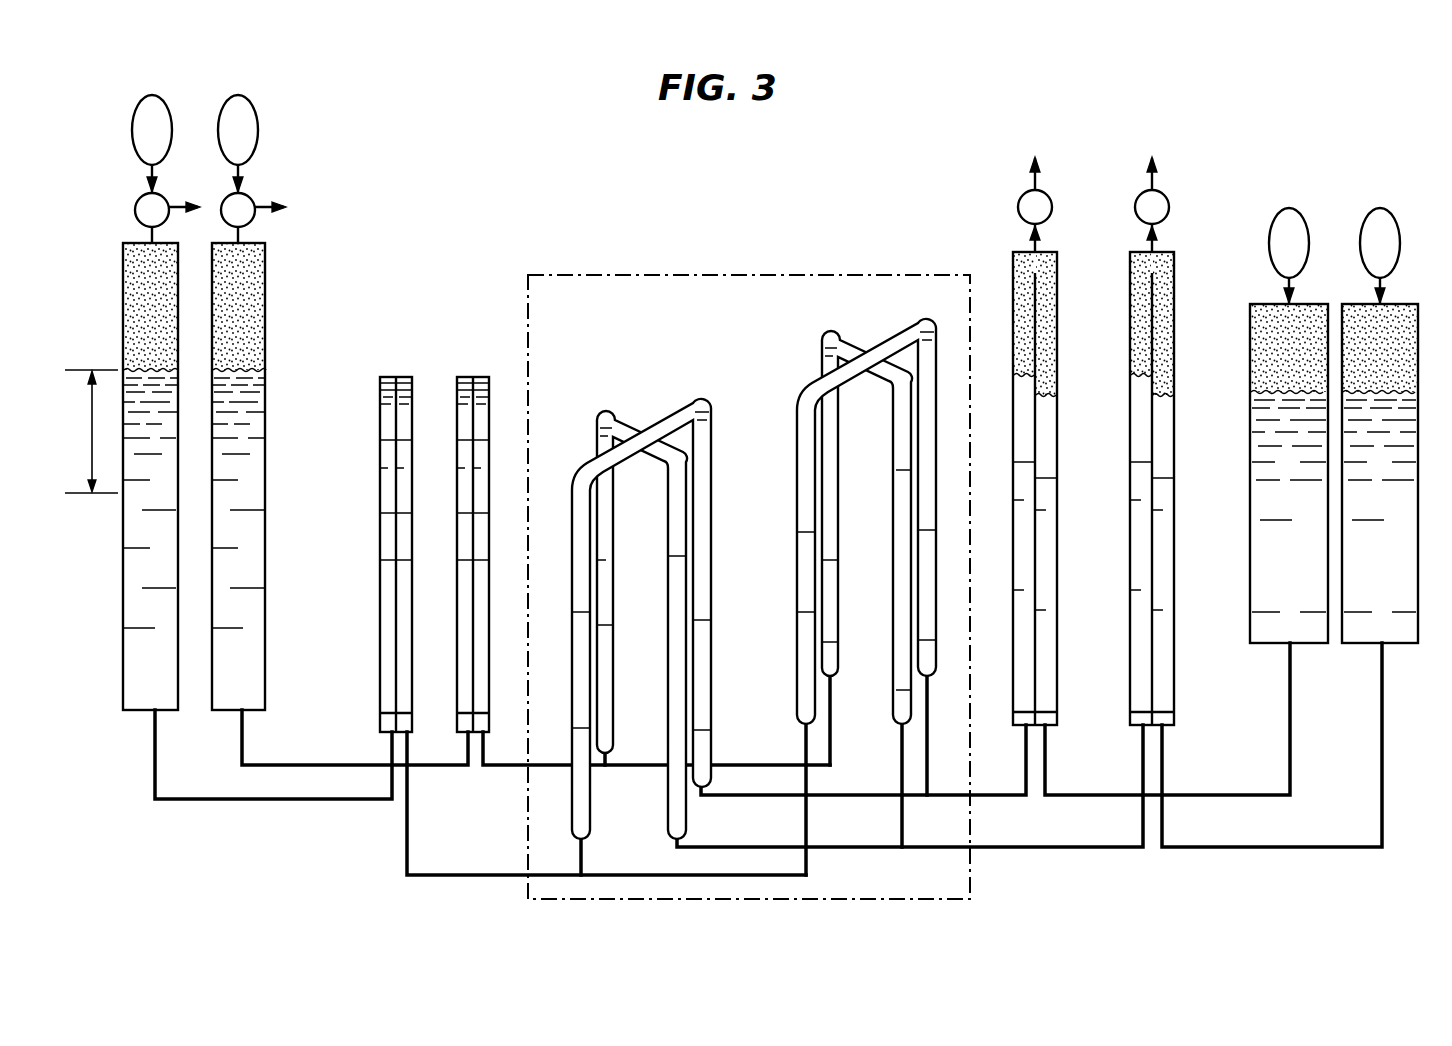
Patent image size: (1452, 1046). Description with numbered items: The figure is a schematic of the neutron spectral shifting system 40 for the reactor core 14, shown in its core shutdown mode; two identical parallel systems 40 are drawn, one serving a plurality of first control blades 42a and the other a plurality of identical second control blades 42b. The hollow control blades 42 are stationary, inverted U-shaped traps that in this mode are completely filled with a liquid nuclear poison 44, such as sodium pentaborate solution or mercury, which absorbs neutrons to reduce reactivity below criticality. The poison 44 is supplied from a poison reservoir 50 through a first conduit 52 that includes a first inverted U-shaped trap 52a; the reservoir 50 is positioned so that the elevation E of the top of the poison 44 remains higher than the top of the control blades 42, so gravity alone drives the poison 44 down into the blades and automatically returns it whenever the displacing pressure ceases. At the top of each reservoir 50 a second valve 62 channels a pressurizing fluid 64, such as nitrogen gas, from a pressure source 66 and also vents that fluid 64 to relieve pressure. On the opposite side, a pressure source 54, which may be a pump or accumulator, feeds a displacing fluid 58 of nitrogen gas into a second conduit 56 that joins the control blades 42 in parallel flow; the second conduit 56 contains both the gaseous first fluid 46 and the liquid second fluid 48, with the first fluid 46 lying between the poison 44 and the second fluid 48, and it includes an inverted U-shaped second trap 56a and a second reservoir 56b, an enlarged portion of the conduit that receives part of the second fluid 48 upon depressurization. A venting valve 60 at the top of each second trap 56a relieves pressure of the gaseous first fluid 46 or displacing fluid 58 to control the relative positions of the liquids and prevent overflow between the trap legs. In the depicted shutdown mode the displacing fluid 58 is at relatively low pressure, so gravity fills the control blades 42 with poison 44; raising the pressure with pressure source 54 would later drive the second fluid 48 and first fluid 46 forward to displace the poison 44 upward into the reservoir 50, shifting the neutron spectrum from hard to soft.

The reactor core 14 is at (612, 275).
The neutron spectral shifting system 40 is at (847, 258).
The hollow control blades 42 is at (798, 381).
The first control blades 42a is at (666, 420).
The second control blades 42b is at (615, 412).
The liquid nuclear poison 44 is at (150, 542).
The first fluid 46 is at (1016, 302).
The second fluid 48 is at (1250, 478).
The poison reservoir 50 is at (123, 266).
The first conduit 52 is at (242, 745).
The first inverted U-shaped trap 52a is at (473, 377).
The pressure source 54 is at (1270, 232).
The second conduit 56 is at (1382, 740).
The second trap 56a is at (1130, 268).
The second reservoir 56b is at (1350, 644).
The displacing fluid 58 is at (1268, 332).
The venting valve 60 is at (1050, 206).
The second valve 62 is at (137, 208).
The pressurizing fluid 64 is at (142, 320).
The pressure source 66 is at (137, 114).
The elevation E is at (90, 432).